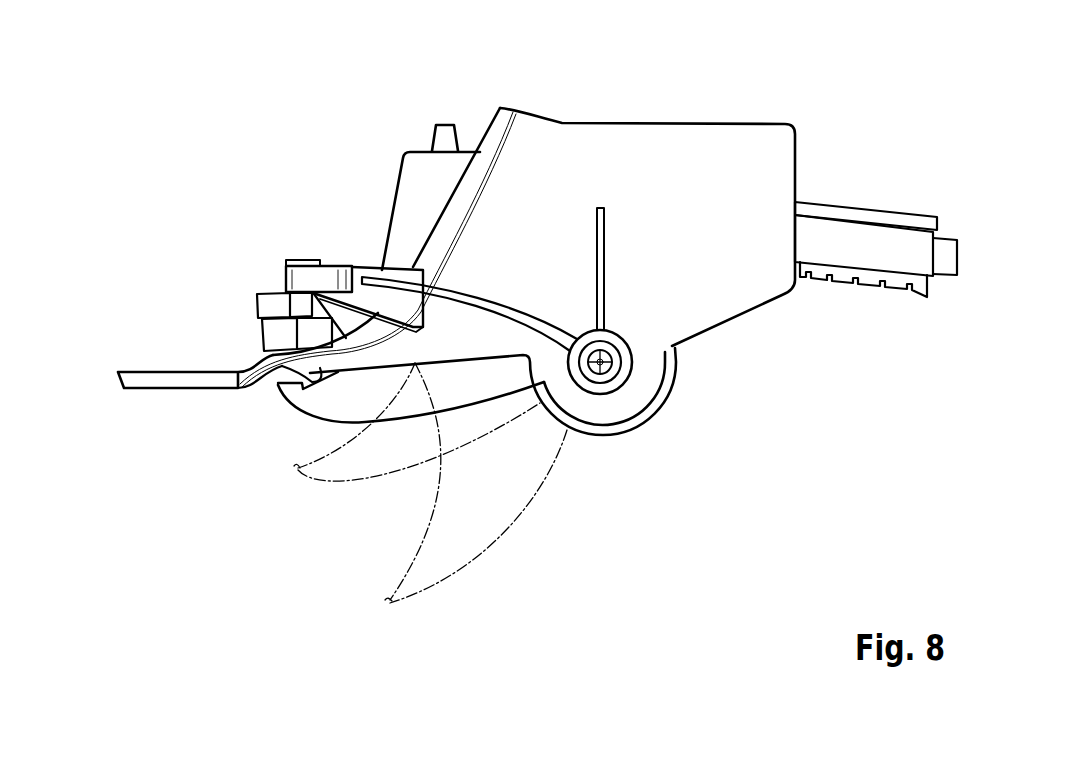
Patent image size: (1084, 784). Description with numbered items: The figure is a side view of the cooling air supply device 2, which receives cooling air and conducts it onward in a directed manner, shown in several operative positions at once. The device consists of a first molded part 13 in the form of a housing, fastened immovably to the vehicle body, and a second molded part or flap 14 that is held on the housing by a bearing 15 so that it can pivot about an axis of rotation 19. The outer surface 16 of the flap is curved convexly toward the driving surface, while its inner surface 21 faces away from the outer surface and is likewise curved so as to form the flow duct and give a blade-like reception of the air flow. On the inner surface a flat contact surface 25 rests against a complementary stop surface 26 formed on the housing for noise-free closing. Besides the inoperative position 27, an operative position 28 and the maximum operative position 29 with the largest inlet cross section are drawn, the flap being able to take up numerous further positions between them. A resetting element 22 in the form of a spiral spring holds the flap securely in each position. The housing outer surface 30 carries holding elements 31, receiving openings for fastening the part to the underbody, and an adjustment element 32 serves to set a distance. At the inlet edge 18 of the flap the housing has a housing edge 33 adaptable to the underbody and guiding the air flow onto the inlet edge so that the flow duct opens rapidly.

The cooling air supply device 2 is at (788, 82).
The first molded part 13 is at (723, 140).
The second molded part 14 is at (513, 498).
The bearing 15 is at (629, 372).
The outer surface 16 is at (515, 526).
The inlet edge 18 is at (297, 467).
The axis of rotation 19 is at (606, 372).
The inner surface 21 is at (423, 542).
The resetting element 22 is at (873, 218).
The contact surface 25 is at (275, 362).
The stop surface 26 is at (318, 365).
The inoperative position 27 is at (274, 400).
The operative position 28 is at (326, 499).
The maximum operative position 29 is at (463, 593).
The housing outer surface 30 is at (606, 170).
The holding elements 31 is at (328, 270).
The adjustment element 32 is at (302, 260).
The housing edge 33 is at (118, 380).